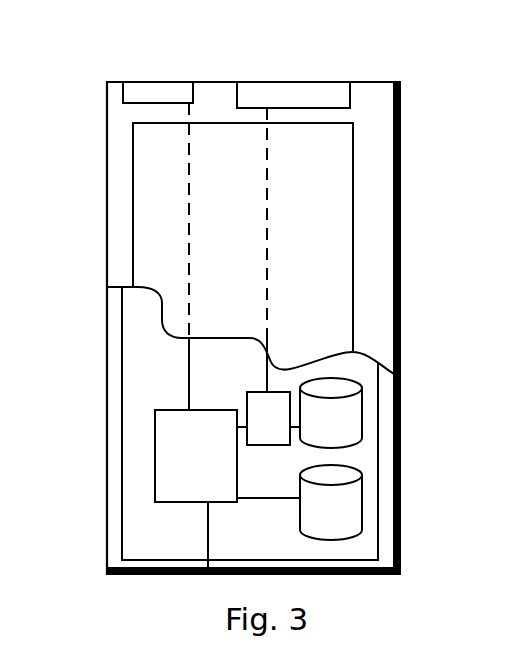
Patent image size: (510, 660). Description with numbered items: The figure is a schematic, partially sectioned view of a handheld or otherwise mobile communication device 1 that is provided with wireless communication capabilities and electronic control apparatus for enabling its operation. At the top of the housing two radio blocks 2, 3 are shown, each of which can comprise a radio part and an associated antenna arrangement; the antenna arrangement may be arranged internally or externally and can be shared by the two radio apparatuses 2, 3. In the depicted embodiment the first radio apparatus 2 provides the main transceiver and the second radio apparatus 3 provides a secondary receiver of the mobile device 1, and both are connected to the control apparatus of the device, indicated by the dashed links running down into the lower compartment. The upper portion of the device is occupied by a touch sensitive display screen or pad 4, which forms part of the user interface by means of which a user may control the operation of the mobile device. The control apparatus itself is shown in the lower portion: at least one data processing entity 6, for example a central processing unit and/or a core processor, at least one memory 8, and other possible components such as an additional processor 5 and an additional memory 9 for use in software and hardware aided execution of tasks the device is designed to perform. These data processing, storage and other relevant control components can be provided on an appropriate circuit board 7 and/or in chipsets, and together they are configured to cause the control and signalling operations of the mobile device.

The mobile communication device 1 is at (122, 147).
The radio block 2 is at (135, 82).
The radio block 3 is at (341, 92).
The touch sensitive display screen or pad 4 is at (177, 235).
The additional processor 5 is at (268, 412).
The data processing entity 6 is at (175, 448).
The circuit board 7 is at (175, 528).
The memory 8 is at (340, 428).
The memory 9 is at (340, 500).